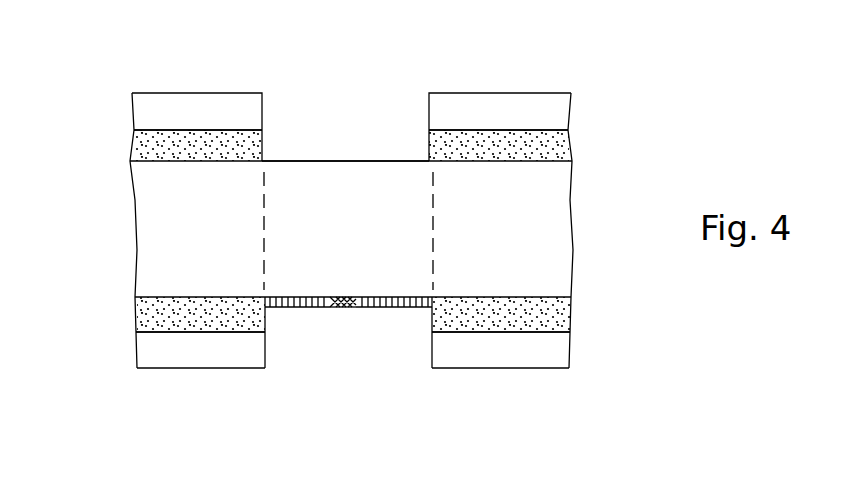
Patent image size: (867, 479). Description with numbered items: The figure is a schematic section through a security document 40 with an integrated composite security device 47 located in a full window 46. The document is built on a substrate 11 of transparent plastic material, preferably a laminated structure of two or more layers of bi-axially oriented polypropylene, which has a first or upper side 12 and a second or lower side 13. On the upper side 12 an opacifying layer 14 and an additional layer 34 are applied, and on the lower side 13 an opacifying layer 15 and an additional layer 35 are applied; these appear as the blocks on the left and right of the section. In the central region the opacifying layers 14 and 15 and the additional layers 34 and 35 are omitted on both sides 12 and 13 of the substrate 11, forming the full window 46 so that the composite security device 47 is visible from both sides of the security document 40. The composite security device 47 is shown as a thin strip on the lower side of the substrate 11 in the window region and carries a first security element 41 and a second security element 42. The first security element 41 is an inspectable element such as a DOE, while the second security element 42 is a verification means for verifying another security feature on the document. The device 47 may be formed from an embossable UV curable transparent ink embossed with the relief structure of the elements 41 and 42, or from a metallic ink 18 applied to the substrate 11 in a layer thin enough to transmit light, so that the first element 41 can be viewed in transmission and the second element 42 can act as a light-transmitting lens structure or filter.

The substrate 11 is at (197, 230).
The first or upper side 12 is at (548, 160).
The second or lower side 13 is at (548, 297).
The opacifying layer 14 is at (155, 150).
The opacifying layer 15 is at (157, 318).
The metallic ink 18 is at (438, 300).
The additional layer 34 is at (155, 115).
The additional layer 35 is at (155, 345).
The security document 40 is at (594, 107).
The first security element 41 is at (344, 308).
The second security element 42 is at (288, 308).
The full window 46 is at (362, 136).
The composite security device 47 is at (368, 310).